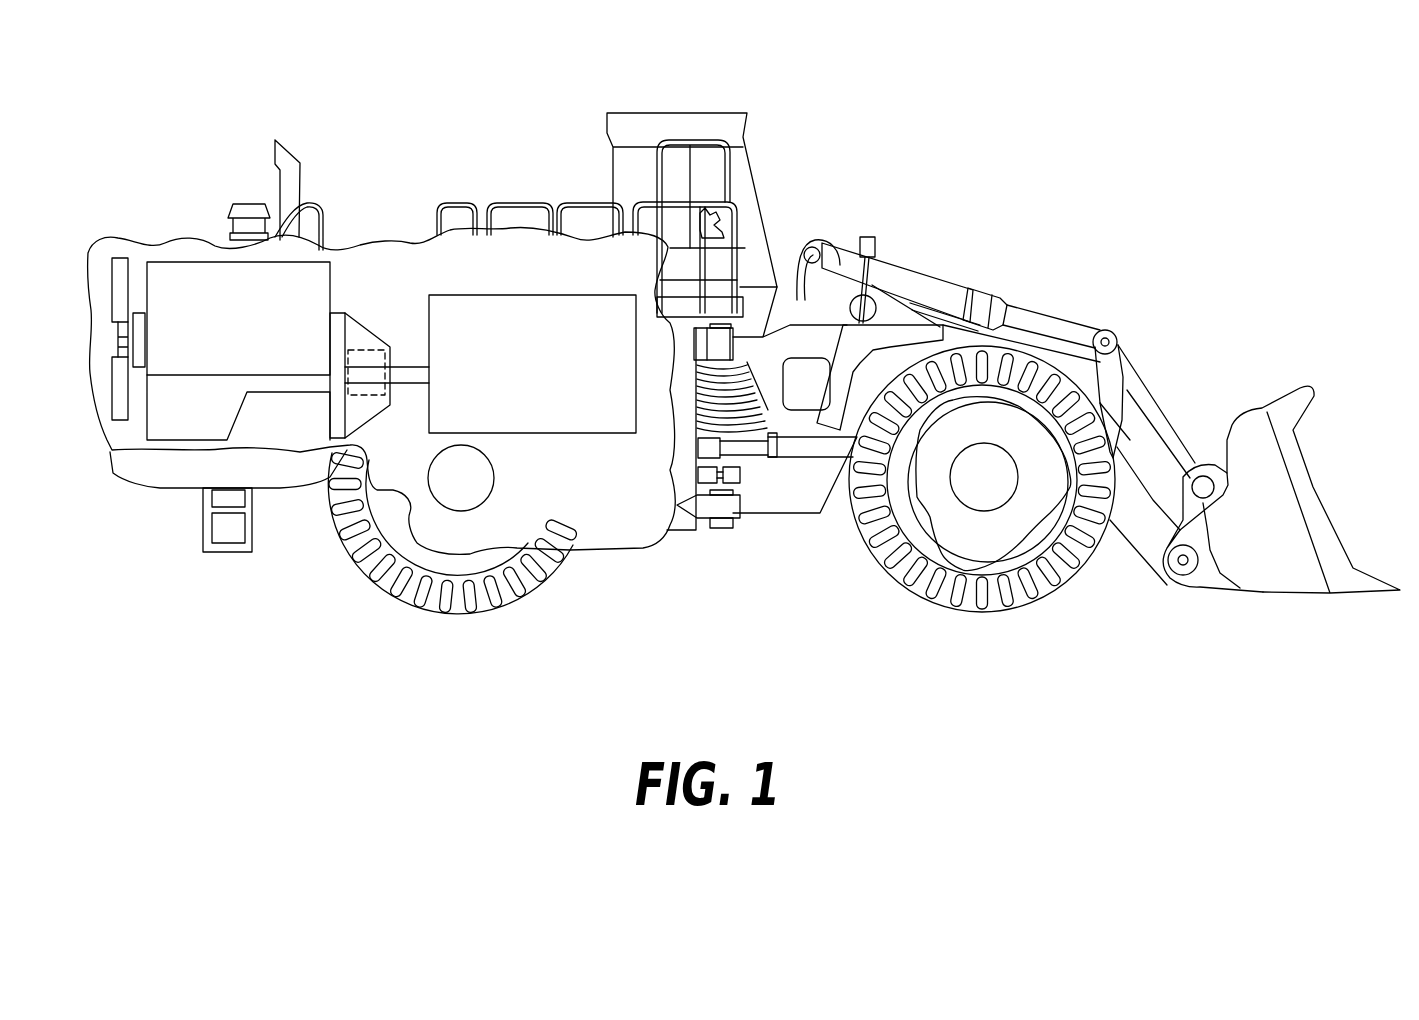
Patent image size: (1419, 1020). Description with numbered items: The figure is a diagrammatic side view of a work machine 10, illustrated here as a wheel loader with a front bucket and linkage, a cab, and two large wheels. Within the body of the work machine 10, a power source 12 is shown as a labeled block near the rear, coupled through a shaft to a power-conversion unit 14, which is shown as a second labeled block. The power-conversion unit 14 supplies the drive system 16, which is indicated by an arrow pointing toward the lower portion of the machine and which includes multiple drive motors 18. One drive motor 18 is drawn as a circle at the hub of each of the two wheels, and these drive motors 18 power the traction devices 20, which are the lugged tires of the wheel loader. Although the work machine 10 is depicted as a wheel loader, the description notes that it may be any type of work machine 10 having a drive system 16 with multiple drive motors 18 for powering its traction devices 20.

The work machine 10 is at (900, 207).
The power source 12 is at (218, 309).
The power-conversion unit 14 is at (520, 339).
The drive system 16 is at (402, 633).
The drive motors 18 is at (434, 503).
The traction devices 20 is at (455, 616).